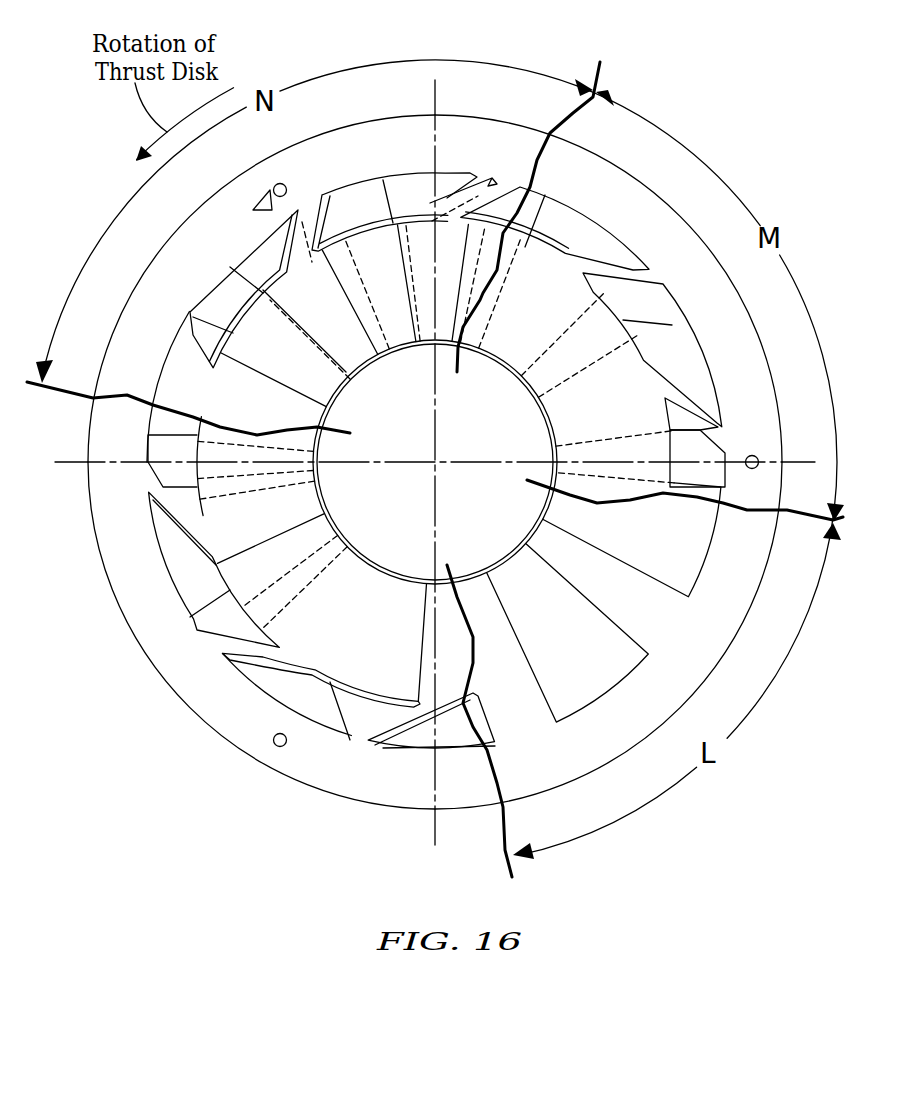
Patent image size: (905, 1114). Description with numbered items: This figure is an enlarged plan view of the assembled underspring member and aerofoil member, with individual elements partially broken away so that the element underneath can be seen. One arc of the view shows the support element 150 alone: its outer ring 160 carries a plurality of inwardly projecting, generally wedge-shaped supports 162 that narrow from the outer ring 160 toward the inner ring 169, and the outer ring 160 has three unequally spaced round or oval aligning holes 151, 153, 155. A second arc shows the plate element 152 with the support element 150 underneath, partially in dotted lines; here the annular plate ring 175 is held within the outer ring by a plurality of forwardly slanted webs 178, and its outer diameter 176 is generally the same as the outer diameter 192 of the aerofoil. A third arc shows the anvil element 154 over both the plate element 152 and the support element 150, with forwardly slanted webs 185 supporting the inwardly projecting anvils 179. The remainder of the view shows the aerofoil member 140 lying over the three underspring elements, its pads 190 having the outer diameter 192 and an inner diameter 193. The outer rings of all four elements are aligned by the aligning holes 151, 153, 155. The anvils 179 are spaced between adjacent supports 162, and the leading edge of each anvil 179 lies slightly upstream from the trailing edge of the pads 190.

The aerofoil member 140 is at (178, 705).
The support element 150 is at (698, 693).
The aligning hole 151 is at (754, 456).
The plate element 152 is at (688, 214).
The aligning hole 153 is at (284, 184).
The anvil element 154 is at (145, 270).
The aligning hole 155 is at (270, 747).
The outer ring 160 is at (642, 728).
The support 162 is at (390, 197).
The inner ring 169 is at (527, 538).
The plate ring 175 is at (622, 406).
The outer diameter 176 is at (628, 318).
The web 178 is at (690, 397).
The anvil 179 is at (342, 303).
The web 185 is at (297, 232).
The pad 190 is at (400, 657).
The outer diameter 192 is at (330, 667).
The inner diameter 193 is at (373, 563).